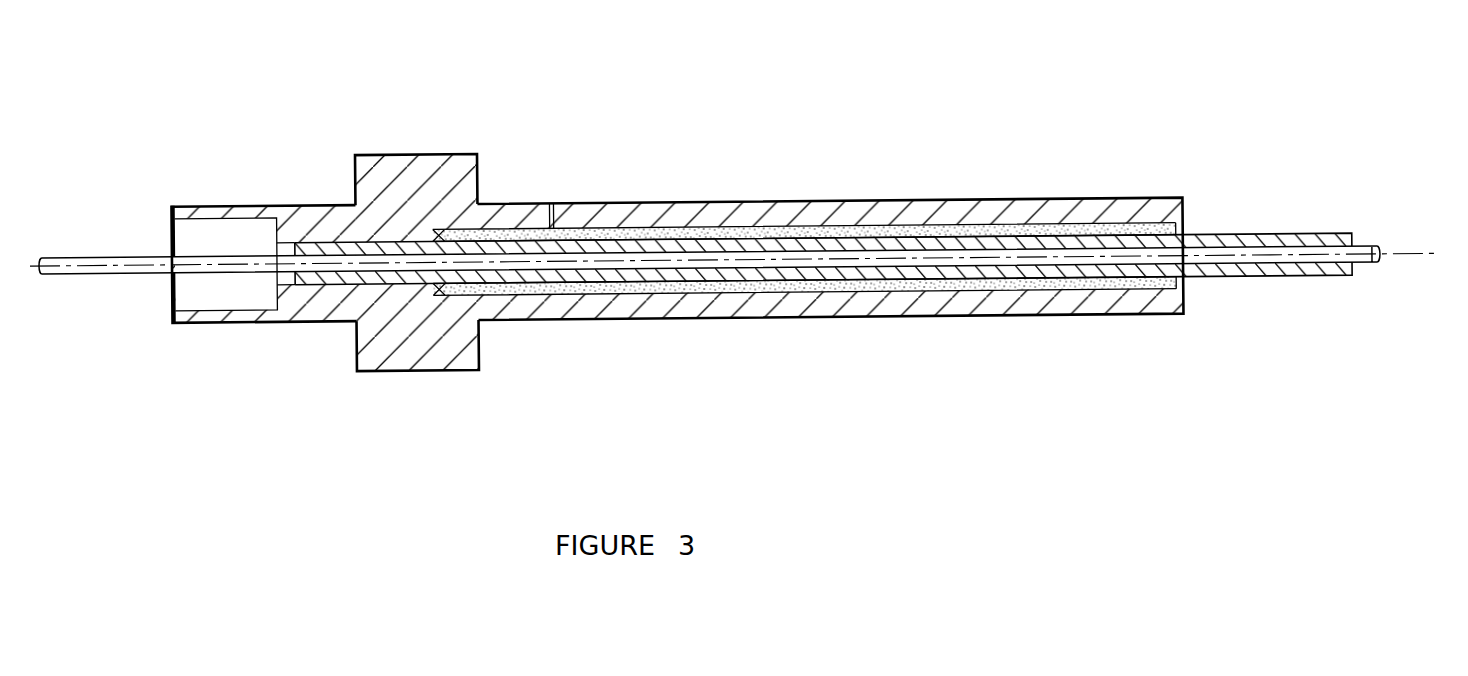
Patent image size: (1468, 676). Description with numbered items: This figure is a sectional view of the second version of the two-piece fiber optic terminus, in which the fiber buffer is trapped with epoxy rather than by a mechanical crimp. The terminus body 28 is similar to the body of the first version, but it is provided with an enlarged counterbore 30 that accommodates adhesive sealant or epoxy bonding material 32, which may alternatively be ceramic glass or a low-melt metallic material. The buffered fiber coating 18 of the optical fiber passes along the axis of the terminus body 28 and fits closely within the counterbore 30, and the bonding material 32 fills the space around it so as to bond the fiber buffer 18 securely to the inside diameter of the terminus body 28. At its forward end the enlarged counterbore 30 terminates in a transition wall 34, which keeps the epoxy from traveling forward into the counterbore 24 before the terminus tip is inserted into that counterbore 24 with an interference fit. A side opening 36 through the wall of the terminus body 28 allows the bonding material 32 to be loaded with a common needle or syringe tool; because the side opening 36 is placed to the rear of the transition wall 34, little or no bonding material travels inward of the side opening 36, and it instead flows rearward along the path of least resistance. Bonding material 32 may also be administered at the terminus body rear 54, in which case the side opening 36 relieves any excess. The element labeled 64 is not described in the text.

The buffered fiber coating 18 is at (1235, 278).
The counterbore 24 is at (172, 305).
The terminus body 28 is at (433, 155).
The enlarged counterbore 30 is at (1132, 217).
The bonding material 32 is at (628, 227).
The transition wall 34 is at (435, 301).
The side opening 36 is at (557, 202).
The terminus body rear 54 is at (350, 240).
The end wall 64 is at (170, 207).